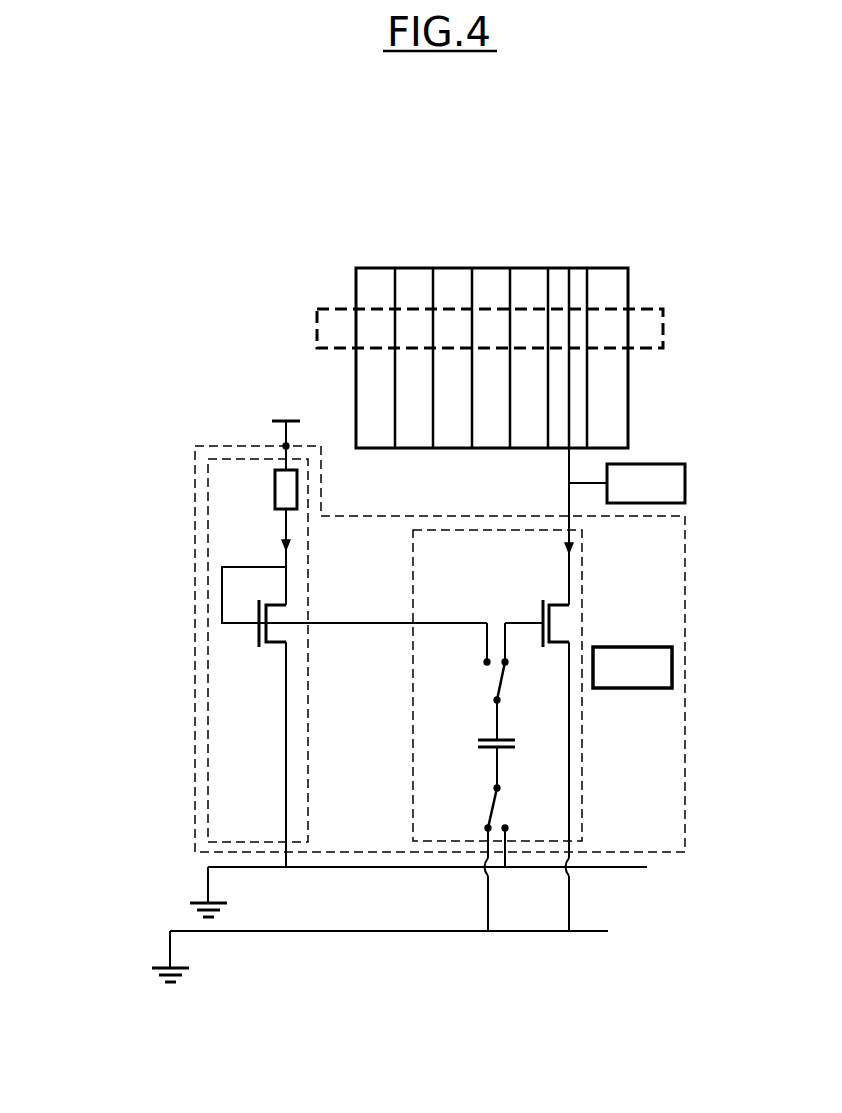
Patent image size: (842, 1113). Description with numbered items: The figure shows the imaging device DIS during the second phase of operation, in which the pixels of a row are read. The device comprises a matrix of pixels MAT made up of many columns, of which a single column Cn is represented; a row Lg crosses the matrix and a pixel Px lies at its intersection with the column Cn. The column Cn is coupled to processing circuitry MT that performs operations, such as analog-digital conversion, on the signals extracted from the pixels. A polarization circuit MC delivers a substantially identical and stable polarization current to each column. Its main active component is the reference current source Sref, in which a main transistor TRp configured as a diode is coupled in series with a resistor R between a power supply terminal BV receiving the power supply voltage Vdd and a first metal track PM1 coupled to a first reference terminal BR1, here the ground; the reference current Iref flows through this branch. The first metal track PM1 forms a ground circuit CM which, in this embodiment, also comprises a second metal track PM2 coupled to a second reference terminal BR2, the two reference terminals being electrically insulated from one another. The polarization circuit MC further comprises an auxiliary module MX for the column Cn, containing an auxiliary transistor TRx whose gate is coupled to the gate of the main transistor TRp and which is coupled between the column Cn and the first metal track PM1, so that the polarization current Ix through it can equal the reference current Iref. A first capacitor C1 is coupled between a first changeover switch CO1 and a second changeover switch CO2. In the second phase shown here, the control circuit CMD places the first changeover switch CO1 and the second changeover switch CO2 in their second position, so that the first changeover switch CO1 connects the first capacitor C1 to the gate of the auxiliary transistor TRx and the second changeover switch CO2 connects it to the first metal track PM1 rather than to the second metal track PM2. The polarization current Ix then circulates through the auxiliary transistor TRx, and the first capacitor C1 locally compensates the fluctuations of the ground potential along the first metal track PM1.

The imaging device DIS is at (215, 340).
The matrix of pixels MAT is at (630, 283).
The column Cn is at (567, 283).
The row Lg is at (686, 327).
The pixel Px is at (580, 336).
The power supply voltage Vdd is at (286, 432).
The power supply terminal BV is at (281, 443).
The resistor R is at (272, 492).
The reference current Iref is at (269, 557).
The main transistor TRp is at (262, 648).
The reference current source Sref is at (310, 732).
The ground circuit CM is at (170, 866).
The processing circuitry MT is at (627, 483).
The auxiliary module MX is at (582, 620).
The polarization current Ix is at (558, 546).
The auxiliary transistor TRx is at (538, 603).
The control circuit CMD is at (632, 667).
The polarization circuit MC is at (686, 690).
The first changeover switch CO1 is at (490, 683).
The first capacitor C1 is at (476, 742).
The second changeover switch CO2 is at (490, 805).
The second metal track PM2 is at (638, 873).
The first metal track PM1 is at (601, 938).
The second reference terminal BR2 is at (192, 911).
The first reference terminal BR1 is at (152, 975).